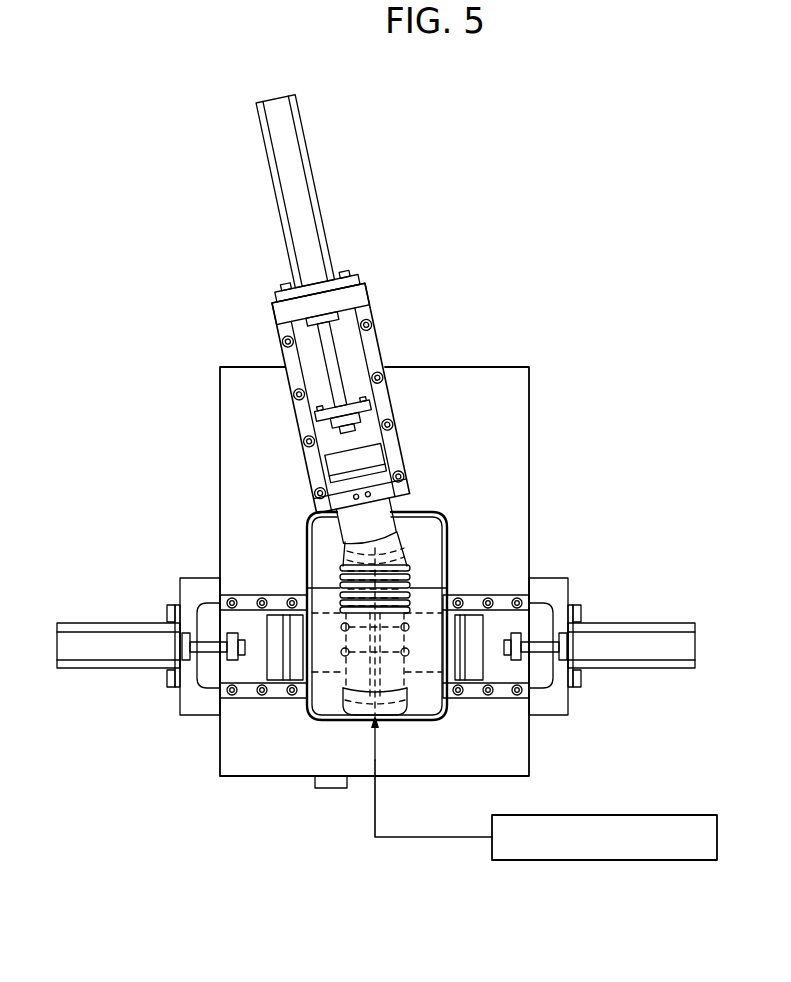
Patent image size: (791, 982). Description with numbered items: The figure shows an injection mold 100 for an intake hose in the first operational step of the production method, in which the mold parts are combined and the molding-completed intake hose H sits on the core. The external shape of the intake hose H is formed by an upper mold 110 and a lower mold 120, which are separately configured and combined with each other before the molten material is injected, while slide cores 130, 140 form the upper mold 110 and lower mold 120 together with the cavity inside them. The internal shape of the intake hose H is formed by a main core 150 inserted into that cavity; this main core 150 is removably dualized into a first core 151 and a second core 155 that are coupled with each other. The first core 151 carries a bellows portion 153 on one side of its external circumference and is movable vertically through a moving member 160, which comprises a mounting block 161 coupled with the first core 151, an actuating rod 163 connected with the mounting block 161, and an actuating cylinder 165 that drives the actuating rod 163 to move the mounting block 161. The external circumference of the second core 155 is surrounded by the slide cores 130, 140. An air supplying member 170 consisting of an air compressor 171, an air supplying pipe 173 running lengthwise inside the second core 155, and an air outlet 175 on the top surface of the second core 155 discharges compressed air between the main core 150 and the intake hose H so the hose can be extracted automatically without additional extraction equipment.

The injection mold 100 is at (387, 518).
The upper mold 110 is at (490, 433).
The lower mold 120 is at (327, 547).
The intake hose H is at (340, 548).
The slide core 130 is at (327, 660).
The slide core 140 is at (425, 662).
The main core 150 is at (509, 592).
The first core 151 is at (400, 558).
The bellows portion 153 is at (418, 610).
The second core 155 is at (403, 645).
The moving member 160 is at (370, 302).
The mounting block 161 is at (368, 480).
The actuating rod 163 is at (328, 347).
The actuating cylinder 165 is at (297, 205).
The air supplying member 170 is at (467, 771).
The air compressor 171 is at (492, 850).
The air supplying pipe 173 is at (345, 716).
The air outlet 175 is at (367, 603).